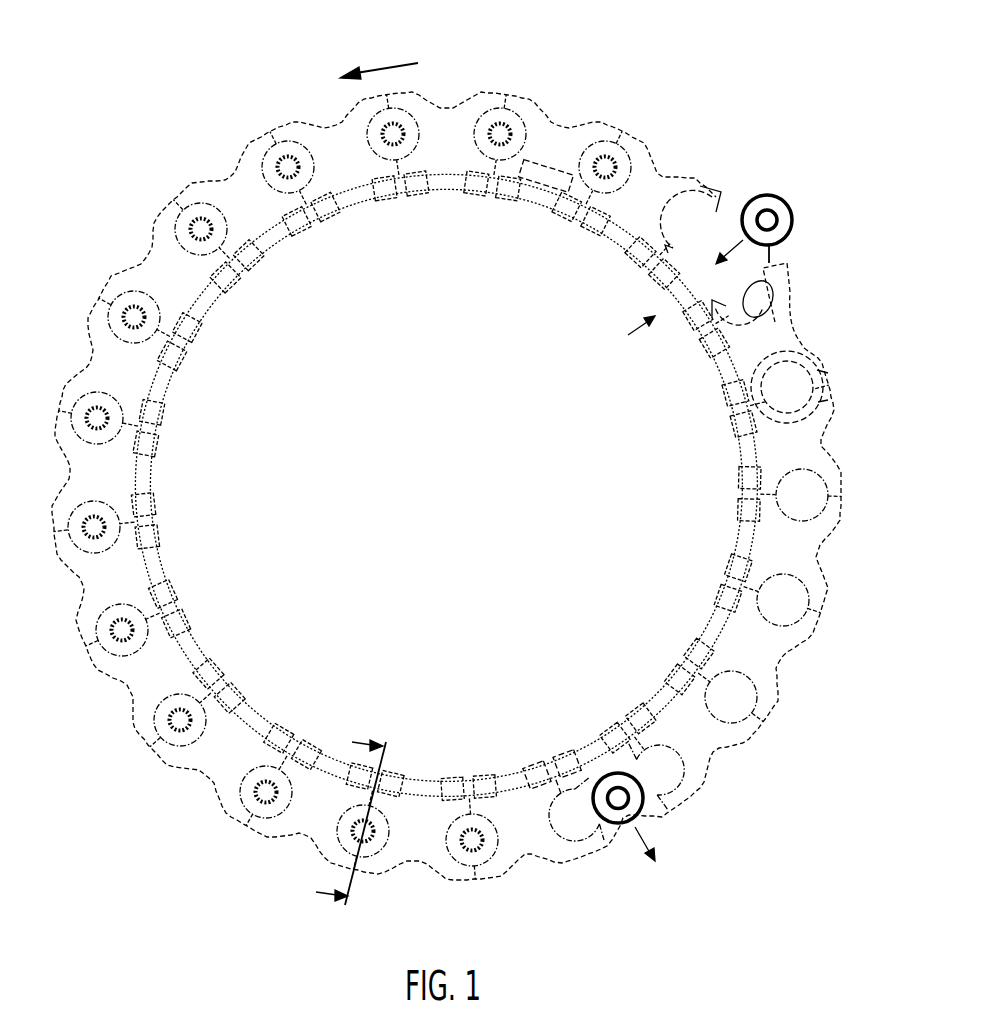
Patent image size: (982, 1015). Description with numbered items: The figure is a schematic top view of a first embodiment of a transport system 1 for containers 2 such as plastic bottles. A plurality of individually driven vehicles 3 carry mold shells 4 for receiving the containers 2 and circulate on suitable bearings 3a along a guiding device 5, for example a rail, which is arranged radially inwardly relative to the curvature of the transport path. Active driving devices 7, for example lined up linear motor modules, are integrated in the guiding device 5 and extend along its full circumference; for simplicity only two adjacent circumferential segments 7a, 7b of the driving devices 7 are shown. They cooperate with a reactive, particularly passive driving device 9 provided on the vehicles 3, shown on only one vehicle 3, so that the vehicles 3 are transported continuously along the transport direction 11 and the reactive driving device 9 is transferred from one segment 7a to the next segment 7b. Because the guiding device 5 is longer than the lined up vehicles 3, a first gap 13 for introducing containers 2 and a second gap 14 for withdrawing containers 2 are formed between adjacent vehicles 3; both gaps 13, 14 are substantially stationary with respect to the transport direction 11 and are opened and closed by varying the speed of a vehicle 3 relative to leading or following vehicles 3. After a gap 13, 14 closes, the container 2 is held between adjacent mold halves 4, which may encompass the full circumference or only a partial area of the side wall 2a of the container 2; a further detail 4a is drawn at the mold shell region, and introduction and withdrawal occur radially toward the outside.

The transport system 1 is at (676, 66).
The container 2 is at (195, 210).
The side wall of the container 2a is at (772, 253).
The vehicle 3 is at (547, 120).
The bearing 3a is at (563, 212).
The mold shell 4 is at (697, 182).
The insertion opening 4a is at (787, 285).
The guiding device 5 is at (446, 188).
The active driving device 7 is at (565, 729).
The first circumferential segment of the driving means 7a is at (565, 757).
The second circumferential segment of the driving means 7b is at (607, 742).
The reactive driving device 9 is at (538, 182).
The transport direction 11 is at (379, 56).
The first gap 13 is at (724, 220).
The second gap 14 is at (658, 805).